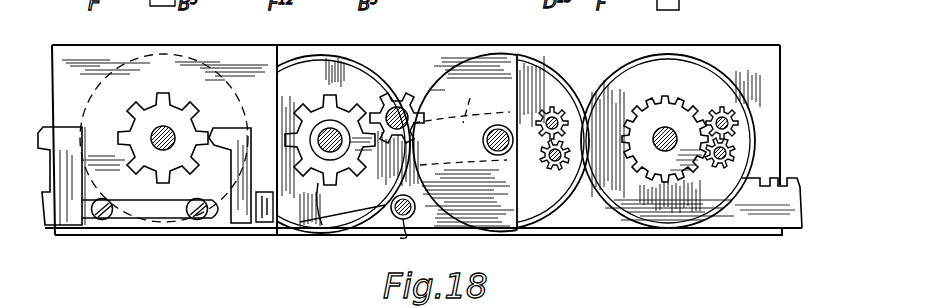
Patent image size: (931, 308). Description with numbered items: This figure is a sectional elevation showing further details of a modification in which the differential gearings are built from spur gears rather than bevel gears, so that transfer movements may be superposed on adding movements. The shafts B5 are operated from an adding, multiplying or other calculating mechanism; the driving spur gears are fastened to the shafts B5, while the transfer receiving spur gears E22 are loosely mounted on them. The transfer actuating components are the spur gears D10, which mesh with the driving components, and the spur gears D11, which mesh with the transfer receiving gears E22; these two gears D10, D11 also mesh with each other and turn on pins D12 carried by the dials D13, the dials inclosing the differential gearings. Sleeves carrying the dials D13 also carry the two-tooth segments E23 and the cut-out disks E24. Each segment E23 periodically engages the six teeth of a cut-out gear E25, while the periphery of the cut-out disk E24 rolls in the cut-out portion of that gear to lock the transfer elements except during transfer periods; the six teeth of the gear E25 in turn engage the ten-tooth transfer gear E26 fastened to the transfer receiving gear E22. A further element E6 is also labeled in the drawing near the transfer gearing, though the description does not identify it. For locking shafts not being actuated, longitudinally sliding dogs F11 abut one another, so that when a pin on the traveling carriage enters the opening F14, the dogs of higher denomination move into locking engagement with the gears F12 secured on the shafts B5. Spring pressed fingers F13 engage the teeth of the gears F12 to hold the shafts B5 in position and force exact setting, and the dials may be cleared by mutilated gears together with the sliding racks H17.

The shaft B5 is at (155, 127).
The longitudinally sliding dog F11 is at (67, 128).
The gear F12 is at (183, 123).
The spring pressed finger F13 is at (327, 203).
The opening F14 is at (252, 210).
The dial D13 is at (355, 33).
The ten-tooth transfer gear E26 is at (351, 127).
The six-tooth cut-out gear E25 is at (405, 93).
The two-tooth segment E23 is at (465, 143).
The cut-out disk E24 is at (467, 194).
The roller E6 is at (468, 198).
The spur gear D11 is at (553, 108).
The pin D12 is at (728, 138).
The spur gear D10 is at (553, 170).
The transfer receiving component spur gear E22 is at (668, 170).
The sliding rack H17 is at (768, 203).